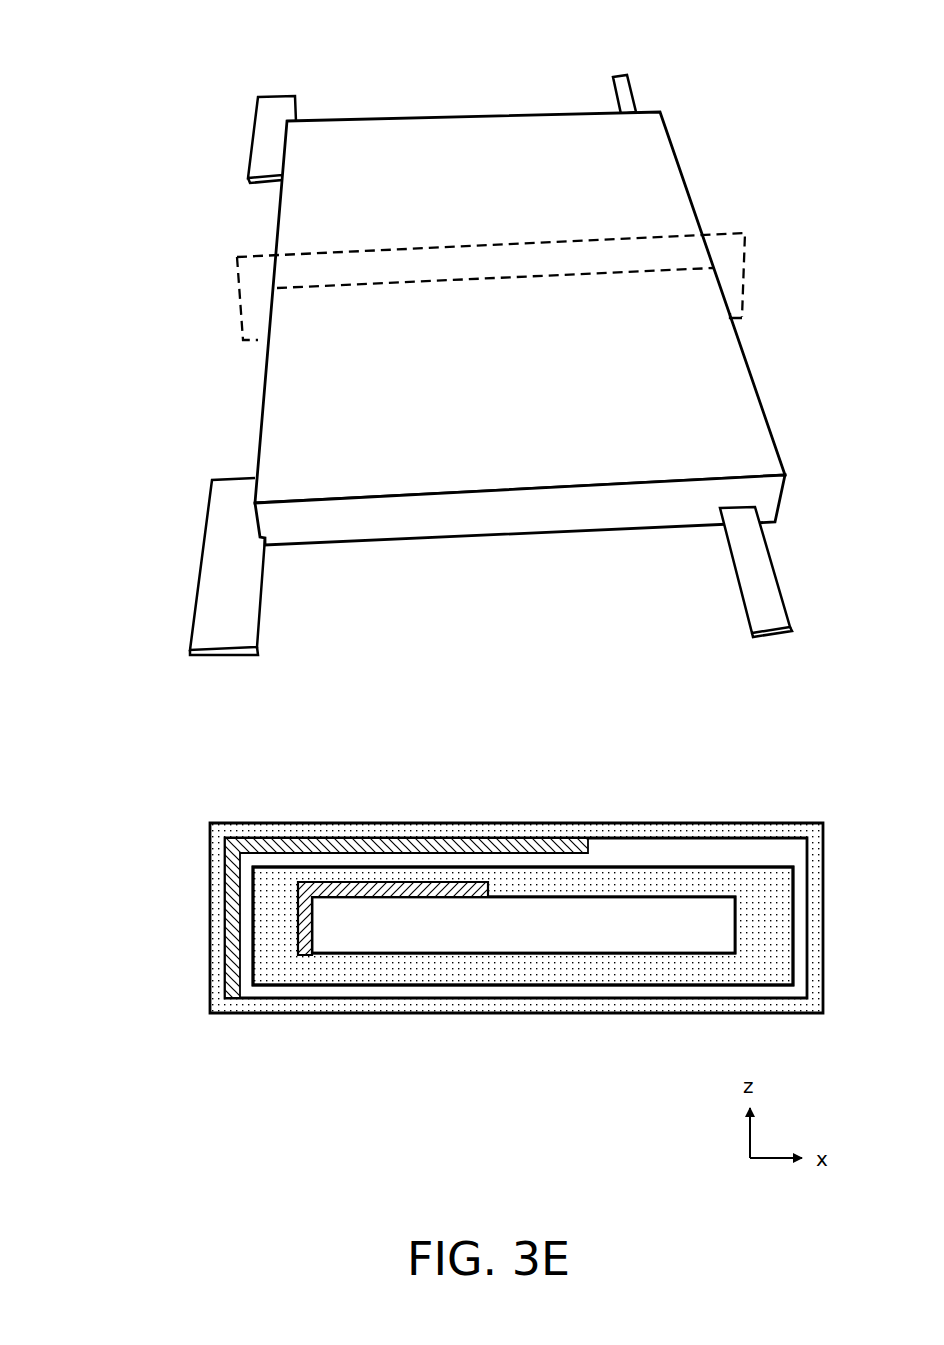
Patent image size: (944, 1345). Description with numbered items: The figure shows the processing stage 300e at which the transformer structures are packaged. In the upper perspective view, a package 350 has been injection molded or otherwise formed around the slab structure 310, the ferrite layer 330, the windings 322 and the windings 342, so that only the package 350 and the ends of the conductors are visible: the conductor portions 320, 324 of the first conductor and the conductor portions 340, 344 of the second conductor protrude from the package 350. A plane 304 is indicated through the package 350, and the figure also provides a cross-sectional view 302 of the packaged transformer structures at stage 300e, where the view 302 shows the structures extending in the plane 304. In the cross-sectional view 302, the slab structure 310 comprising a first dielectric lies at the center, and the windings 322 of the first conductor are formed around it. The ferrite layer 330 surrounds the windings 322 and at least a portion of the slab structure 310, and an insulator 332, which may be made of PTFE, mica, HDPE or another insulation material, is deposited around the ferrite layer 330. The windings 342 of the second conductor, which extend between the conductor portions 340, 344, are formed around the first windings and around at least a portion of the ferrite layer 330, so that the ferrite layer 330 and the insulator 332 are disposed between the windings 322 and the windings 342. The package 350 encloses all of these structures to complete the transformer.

The processing stage 300e is at (114, 83).
The cross-sectional view 302 is at (116, 809).
The plane 304 is at (231, 263).
The slab structure 310 is at (544, 940).
The conductor portion 320 is at (741, 612).
The windings 322 is at (360, 899).
The conductor portion 324 is at (608, 93).
The ferrite layer 330 is at (787, 972).
The insulator 332 is at (724, 870).
The conductor portion 340 is at (269, 601).
The windings 342 is at (367, 835).
The conductor portion 344 is at (248, 134).
The package 350 is at (427, 108).